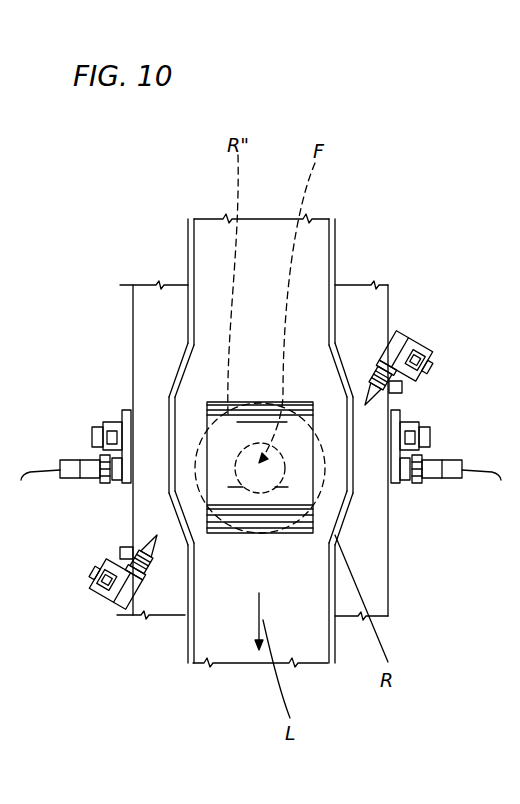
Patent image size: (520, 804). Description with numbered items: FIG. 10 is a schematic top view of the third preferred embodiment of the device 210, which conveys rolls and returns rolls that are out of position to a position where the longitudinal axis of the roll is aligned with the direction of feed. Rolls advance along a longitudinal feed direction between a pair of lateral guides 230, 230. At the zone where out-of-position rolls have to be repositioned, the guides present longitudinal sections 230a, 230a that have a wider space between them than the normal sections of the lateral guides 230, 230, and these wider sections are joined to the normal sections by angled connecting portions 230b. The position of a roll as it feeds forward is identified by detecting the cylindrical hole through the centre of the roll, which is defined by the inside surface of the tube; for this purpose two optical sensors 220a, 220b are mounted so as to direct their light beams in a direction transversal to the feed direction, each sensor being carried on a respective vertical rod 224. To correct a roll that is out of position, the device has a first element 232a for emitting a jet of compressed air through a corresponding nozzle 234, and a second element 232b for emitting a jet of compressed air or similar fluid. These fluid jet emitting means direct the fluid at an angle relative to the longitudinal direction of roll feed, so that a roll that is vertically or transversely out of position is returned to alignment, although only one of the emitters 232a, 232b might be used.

The device 210 is at (398, 598).
The optical sensor 220a is at (430, 478).
The optical sensor 220b is at (67, 463).
The vertical rod 224 is at (108, 430).
The lateral guide 230 is at (186, 258).
The longitudinal section 230a is at (167, 466).
The angled connecting portion 230b is at (182, 373).
The first element for emitting a jet of compressed air 232a is at (420, 333).
The second element for emitting a jet of compressed air 232b is at (110, 604).
The nozzle 234 is at (368, 399).